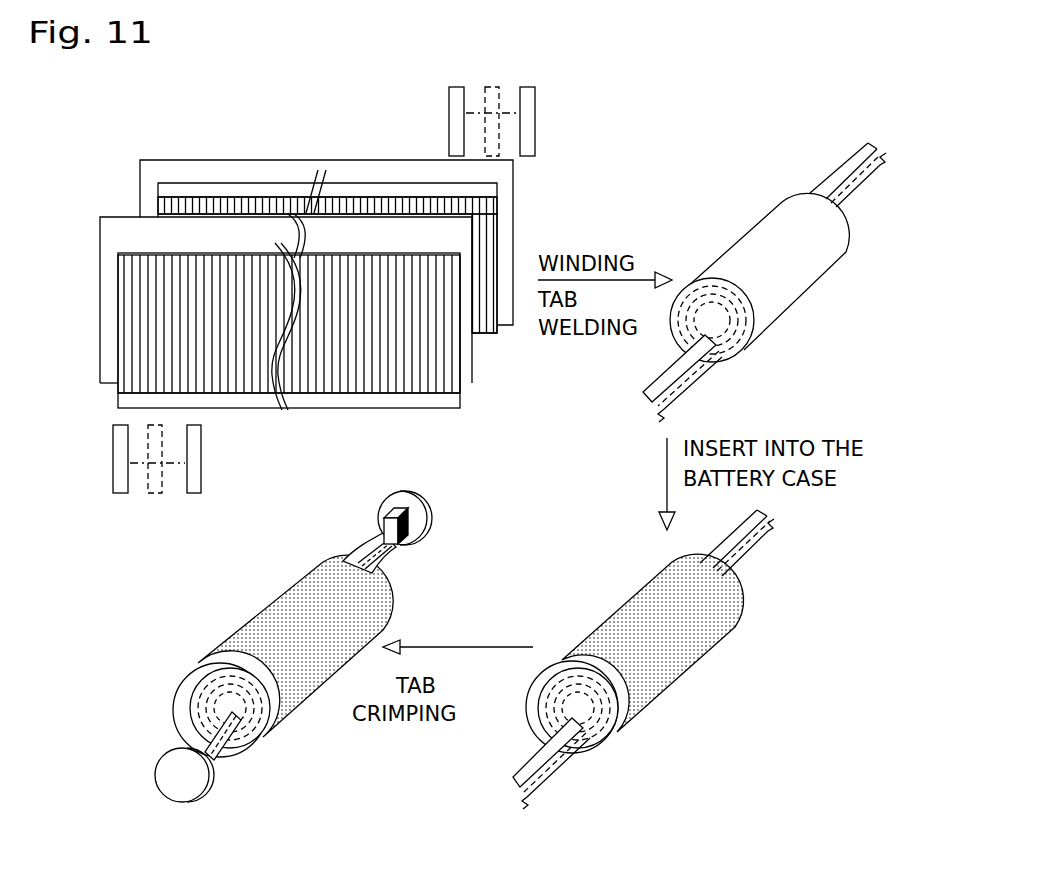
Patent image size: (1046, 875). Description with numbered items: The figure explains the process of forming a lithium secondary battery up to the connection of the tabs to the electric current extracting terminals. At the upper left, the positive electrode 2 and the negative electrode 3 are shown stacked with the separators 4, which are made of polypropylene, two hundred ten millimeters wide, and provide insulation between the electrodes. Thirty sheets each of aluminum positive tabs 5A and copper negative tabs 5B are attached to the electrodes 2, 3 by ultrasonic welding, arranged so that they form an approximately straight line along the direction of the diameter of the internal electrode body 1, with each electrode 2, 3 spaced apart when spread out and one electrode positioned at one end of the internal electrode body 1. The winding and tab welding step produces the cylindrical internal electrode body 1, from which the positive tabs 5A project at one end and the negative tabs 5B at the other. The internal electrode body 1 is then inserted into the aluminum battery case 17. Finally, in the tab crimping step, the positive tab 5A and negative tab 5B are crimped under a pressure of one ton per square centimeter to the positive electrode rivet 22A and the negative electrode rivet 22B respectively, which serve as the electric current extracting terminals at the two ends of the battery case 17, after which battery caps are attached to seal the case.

The internal electrode body 1 is at (800, 268).
The positive electrode 2 is at (180, 188).
The negative electrode 3 is at (428, 400).
The separator 4 is at (127, 230).
The positive tab 5A is at (452, 113).
The negative tab 5B is at (195, 450).
The battery case 17 is at (693, 652).
The positive electrode rivet 22A is at (418, 522).
The negative electrode rivet 22B is at (185, 780).